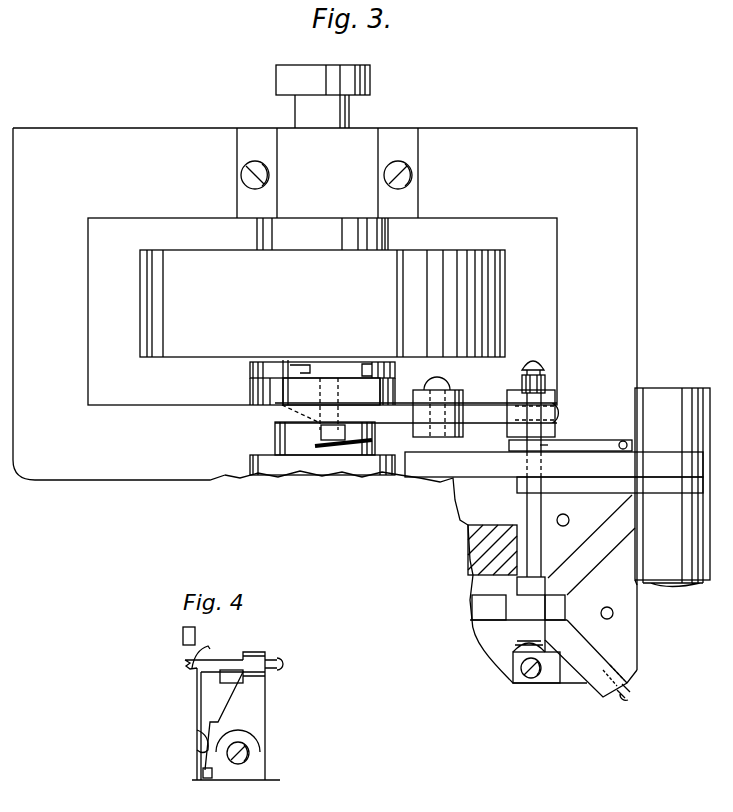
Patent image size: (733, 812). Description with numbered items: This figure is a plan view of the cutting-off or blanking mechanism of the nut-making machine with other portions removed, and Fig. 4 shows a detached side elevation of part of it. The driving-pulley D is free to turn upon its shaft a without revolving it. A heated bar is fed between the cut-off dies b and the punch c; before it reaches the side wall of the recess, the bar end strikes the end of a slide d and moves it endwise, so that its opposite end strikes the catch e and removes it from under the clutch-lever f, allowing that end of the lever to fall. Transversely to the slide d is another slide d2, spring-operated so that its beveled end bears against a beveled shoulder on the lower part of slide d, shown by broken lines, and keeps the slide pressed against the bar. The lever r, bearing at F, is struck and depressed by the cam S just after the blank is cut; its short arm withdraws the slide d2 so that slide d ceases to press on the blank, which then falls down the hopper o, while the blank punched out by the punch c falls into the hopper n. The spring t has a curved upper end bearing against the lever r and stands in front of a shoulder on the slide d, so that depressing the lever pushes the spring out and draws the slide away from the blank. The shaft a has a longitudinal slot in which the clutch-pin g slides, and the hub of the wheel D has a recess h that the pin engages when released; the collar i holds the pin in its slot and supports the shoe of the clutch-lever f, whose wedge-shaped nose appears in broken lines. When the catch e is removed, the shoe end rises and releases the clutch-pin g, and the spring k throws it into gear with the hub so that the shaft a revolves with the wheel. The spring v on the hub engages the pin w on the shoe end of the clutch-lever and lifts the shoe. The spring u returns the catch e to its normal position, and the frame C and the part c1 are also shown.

In FIG. 3, the shaft a is at (323, 96).
In FIG. 3, the frame C is at (325, 405).
In FIG. 3, the driving-pulley D is at (322, 303).
In FIG. 3, the spring v is at (322, 371).
In FIG. 3, the pin w is at (296, 377).
In FIG. 3, the recess h is at (368, 370).
In FIG. 3, the collar i is at (322, 404).
In FIG. 3, the clutch-pin g is at (325, 438).
In FIG. 3, the spring k is at (351, 441).
In FIG. 3, the cam S is at (322, 465).
In FIG. 3, the clutch-lever f is at (416, 407).
In FIG. 4, the clutch-lever f is at (225, 681).
In FIG. 3, the catch e is at (529, 399).
In FIG. 4, the catch e is at (237, 716).
In FIG. 3, the slide d is at (531, 494).
In FIG. 4, the slide d is at (203, 718).
In FIG. 3, the spring t is at (570, 437).
In FIG. 4, the spring t is at (205, 651).
In FIG. 3, the spring u is at (605, 445).
In FIG. 4, the spring u is at (206, 767).
In FIG. 3, the pin c1 is at (549, 448).
In FIG. 3, the lever r is at (554, 464).
In FIG. 4, the lever r is at (183, 633).
In FIG. 3, the transverse slide d2 is at (610, 486).
In FIG. 3, the bearing F is at (672, 487).
In FIG. 3, the cut-off dies b is at (591, 597).
In FIG. 3, the hopper o is at (518, 600).
In FIG. 3, the punch c is at (489, 607).
In FIG. 3, the hopper n is at (555, 607).